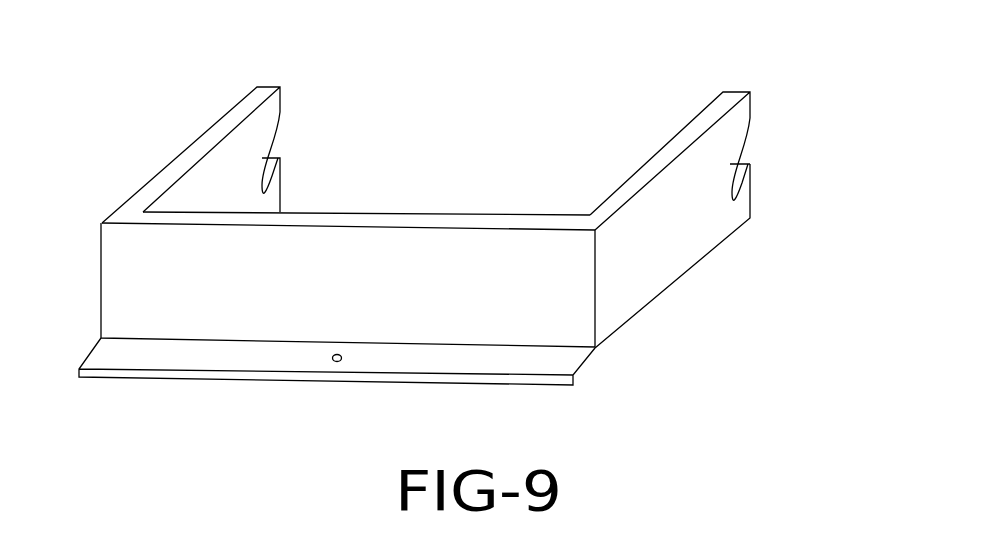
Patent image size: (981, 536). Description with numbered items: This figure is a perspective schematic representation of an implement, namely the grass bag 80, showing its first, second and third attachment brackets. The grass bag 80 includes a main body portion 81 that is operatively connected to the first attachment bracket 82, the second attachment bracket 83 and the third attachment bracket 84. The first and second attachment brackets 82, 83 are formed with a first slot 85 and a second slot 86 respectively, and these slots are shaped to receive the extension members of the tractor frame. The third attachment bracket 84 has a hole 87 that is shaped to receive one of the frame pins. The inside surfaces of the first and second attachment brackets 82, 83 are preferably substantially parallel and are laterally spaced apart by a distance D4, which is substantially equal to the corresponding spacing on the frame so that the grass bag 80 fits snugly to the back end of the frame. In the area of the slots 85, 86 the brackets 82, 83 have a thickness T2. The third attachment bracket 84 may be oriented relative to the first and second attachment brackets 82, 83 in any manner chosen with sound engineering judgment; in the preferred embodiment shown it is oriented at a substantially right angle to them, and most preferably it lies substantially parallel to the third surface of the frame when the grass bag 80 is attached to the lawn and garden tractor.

The grass bag 80 is at (782, 73).
The main body portion 81 is at (520, 328).
The first attachment bracket 82 is at (675, 245).
The second attachment bracket 83 is at (158, 183).
The third attachment bracket 84 is at (113, 357).
The first slot 85 is at (740, 156).
The second slot 86 is at (268, 147).
The hole 87 is at (330, 359).
The thickness T2 is at (325, 92).
The distance D4 is at (620, 186).